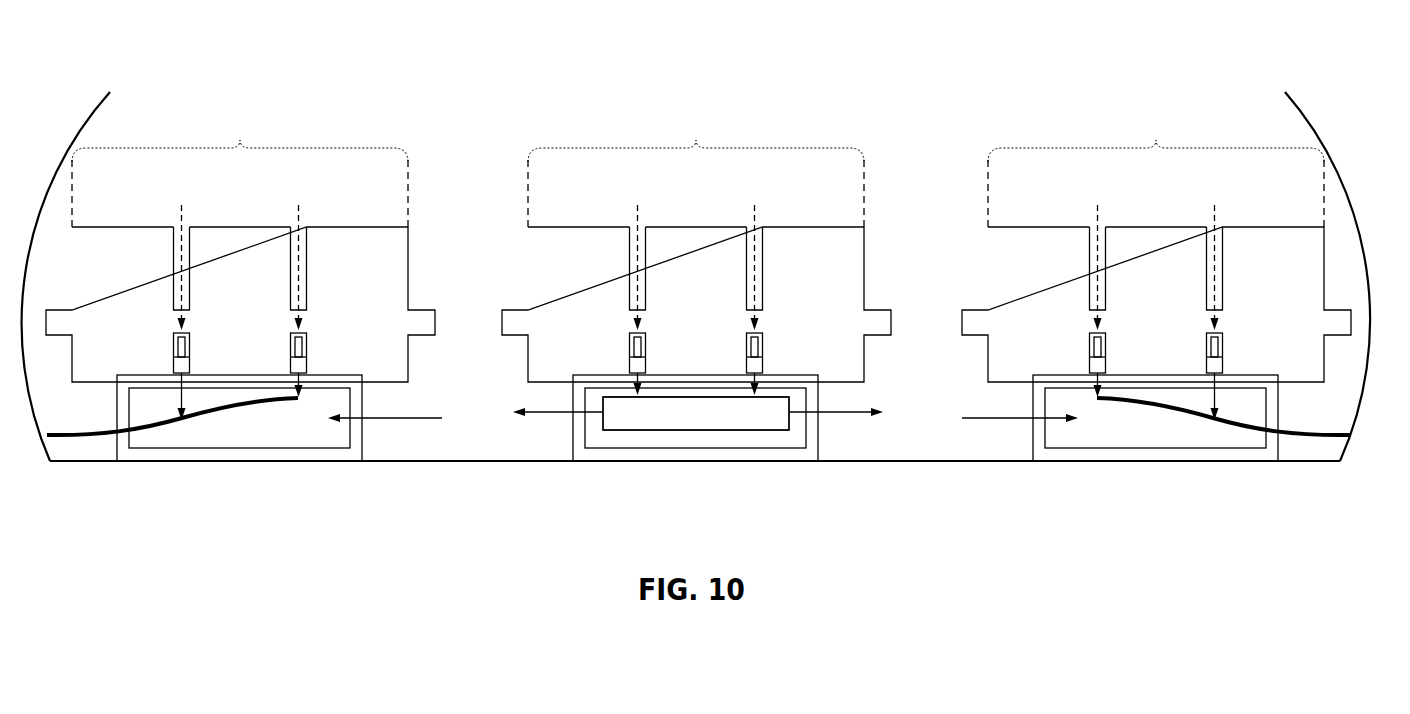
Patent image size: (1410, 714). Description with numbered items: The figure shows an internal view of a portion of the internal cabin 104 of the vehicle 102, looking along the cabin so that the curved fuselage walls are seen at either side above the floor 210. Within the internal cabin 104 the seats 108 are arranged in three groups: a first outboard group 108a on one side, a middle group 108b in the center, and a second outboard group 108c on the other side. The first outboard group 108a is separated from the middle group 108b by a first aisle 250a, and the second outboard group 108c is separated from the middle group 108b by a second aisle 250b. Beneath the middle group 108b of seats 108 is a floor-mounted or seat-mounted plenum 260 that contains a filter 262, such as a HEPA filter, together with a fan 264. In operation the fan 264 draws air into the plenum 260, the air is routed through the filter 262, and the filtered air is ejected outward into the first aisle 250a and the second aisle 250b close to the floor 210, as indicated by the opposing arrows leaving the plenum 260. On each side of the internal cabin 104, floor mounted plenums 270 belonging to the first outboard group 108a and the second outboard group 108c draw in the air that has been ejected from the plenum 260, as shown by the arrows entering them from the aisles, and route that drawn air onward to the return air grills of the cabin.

The vehicle 102 is at (1243, 74).
The internal cabin 104 is at (1304, 113).
The seats 108 is at (313, 227).
The first outboard group 108a is at (240, 167).
The middle group 108b is at (696, 167).
The second outboard group 108c is at (1156, 167).
The floor 210 is at (413, 461).
The first aisle 250a is at (469, 186).
The second aisle 250b is at (948, 186).
The plenum 260 is at (626, 431).
The filter 262 is at (677, 431).
The fan 264 is at (747, 431).
The floor mounted plenums 270 is at (210, 415).